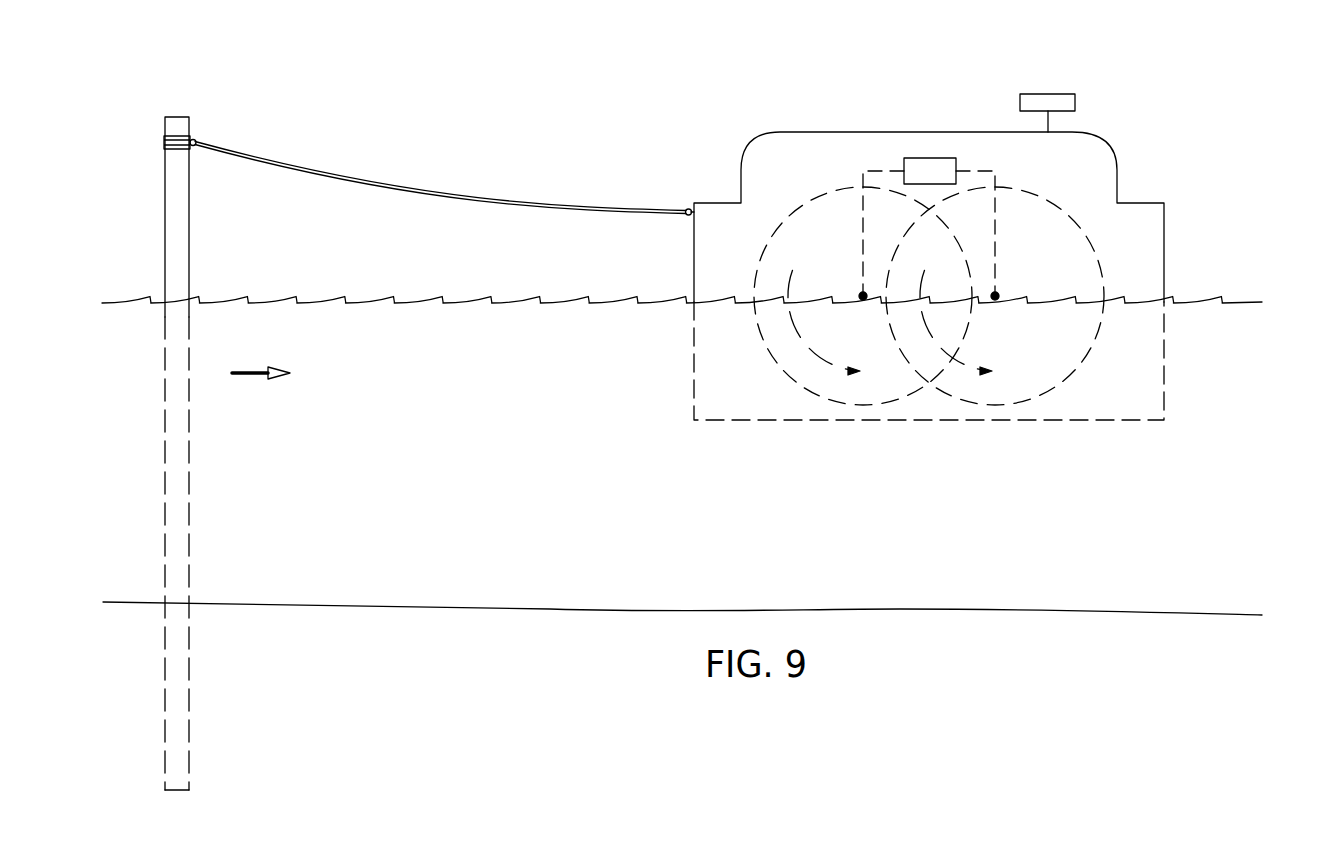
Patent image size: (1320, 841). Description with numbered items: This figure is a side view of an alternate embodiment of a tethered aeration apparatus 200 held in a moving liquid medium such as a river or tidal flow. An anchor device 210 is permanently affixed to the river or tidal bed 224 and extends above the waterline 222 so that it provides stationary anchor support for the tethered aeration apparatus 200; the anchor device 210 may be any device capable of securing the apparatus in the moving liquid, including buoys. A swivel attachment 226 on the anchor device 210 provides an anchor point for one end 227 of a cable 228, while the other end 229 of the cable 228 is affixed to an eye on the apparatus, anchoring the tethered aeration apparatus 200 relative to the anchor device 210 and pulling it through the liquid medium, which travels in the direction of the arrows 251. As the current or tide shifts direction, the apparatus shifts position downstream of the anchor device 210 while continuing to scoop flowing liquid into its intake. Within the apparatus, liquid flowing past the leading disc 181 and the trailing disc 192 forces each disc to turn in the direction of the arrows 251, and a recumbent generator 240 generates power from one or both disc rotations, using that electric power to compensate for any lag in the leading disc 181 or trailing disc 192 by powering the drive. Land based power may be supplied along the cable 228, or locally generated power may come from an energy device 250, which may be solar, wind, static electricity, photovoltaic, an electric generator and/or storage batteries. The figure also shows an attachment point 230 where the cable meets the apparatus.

The tethered aeration apparatus 200 is at (922, 112).
The anchor device 210 is at (178, 251).
The waterline 222 is at (257, 305).
The river or tidal bed 224 is at (550, 608).
The swivel attachment 226 is at (193, 136).
The one end of cable 227 is at (196, 142).
The cable 228 is at (537, 203).
The other end of cable 229 is at (685, 214).
The attachment eye 230 is at (689, 209).
The recumbent generator 240 is at (907, 167).
The energy device 250 is at (1042, 93).
The leading disc 181 is at (867, 407).
The trailing disc 192 is at (1015, 404).
The arrows 251 is at (248, 372).